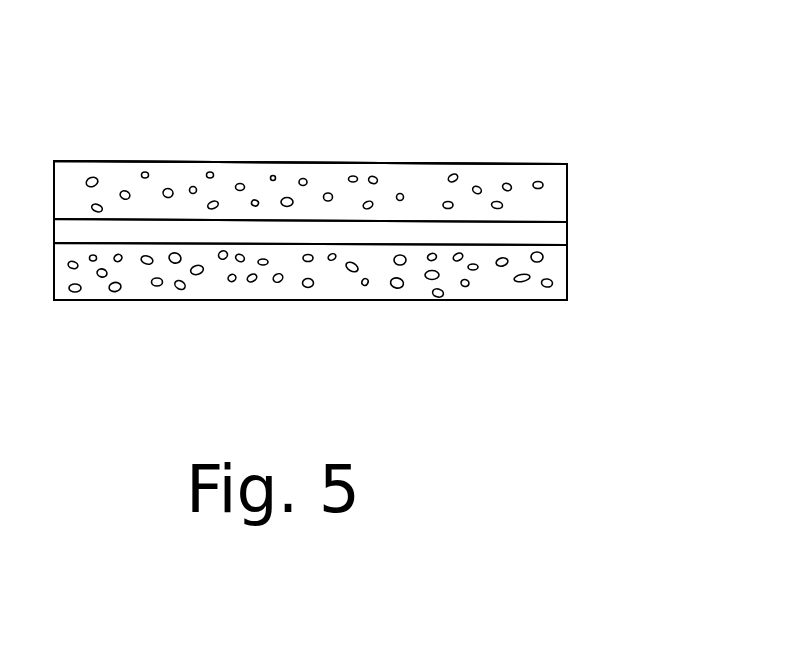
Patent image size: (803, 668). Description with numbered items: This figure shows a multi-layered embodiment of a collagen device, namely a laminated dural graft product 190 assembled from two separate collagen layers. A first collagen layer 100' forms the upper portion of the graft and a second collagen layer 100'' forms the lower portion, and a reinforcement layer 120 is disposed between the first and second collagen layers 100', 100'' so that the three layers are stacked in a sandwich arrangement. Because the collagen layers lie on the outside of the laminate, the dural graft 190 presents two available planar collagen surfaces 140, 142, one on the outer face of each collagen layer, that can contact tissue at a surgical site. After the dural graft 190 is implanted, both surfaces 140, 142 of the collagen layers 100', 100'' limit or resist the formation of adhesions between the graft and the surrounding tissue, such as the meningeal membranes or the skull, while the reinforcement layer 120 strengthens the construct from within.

The laminated dural graft product 190 is at (317, 106).
The first collagen layer 100' is at (336, 146).
The second collagen layer 100'' is at (340, 309).
The reinforcement layer 120 is at (570, 233).
The planar collagen surface 140 is at (147, 161).
The planar collagen surface 142 is at (134, 302).